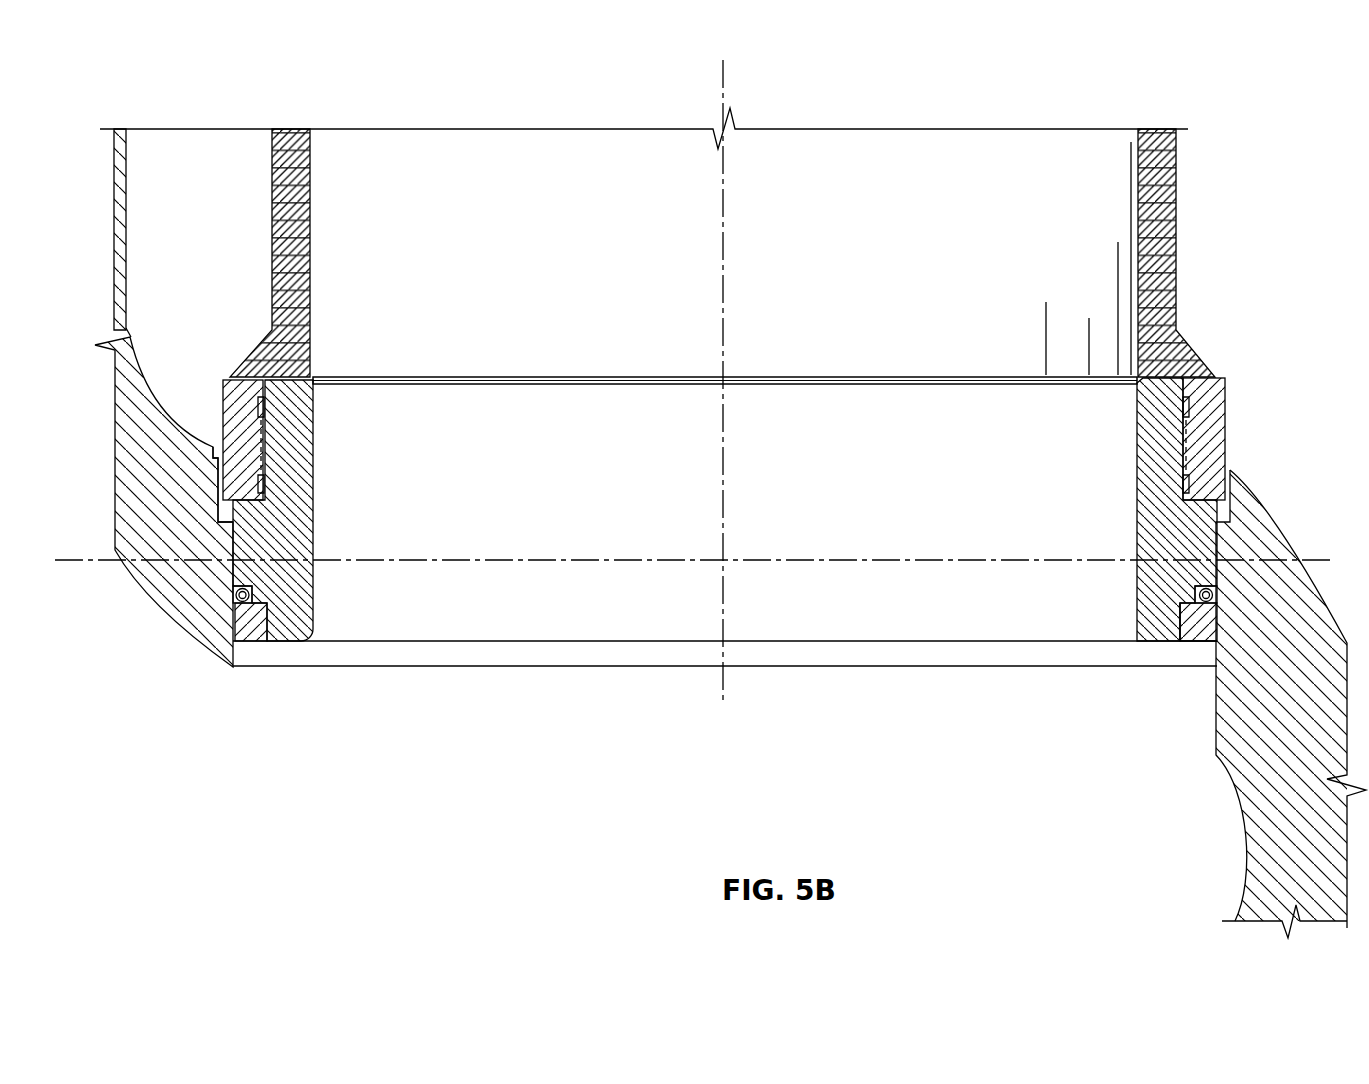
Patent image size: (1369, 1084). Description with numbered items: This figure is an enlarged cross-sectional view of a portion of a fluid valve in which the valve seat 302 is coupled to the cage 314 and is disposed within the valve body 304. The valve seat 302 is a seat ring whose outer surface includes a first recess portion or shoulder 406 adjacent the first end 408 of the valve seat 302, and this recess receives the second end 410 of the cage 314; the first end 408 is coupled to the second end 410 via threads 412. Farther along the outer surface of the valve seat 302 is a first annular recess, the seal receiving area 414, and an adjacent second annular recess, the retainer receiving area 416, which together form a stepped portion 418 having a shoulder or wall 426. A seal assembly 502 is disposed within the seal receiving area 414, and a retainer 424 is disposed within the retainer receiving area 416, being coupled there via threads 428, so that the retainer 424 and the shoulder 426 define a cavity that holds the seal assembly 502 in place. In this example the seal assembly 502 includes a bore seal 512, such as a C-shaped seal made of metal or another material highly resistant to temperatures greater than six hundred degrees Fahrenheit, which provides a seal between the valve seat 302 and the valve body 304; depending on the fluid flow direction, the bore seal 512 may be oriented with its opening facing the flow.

The valve seat 302 is at (300, 587).
The valve body 304 is at (1247, 843).
The cage 314 is at (1177, 218).
The first recess portion or shoulder 406 is at (243, 398).
The first end of the valve seat 408 is at (295, 390).
The second end of the cage 410 is at (222, 427).
The threads 412 is at (265, 438).
The seal receiving area 414 is at (1158, 594).
The retainer receiving area 416 is at (1178, 605).
The stepped portion 418 is at (1197, 596).
The retainer 424 is at (1192, 637).
The shoulder or wall 426 is at (1207, 590).
The threads 428 is at (1178, 613).
The seal assembly 502 is at (193, 560).
The bore seal 512 is at (233, 593).